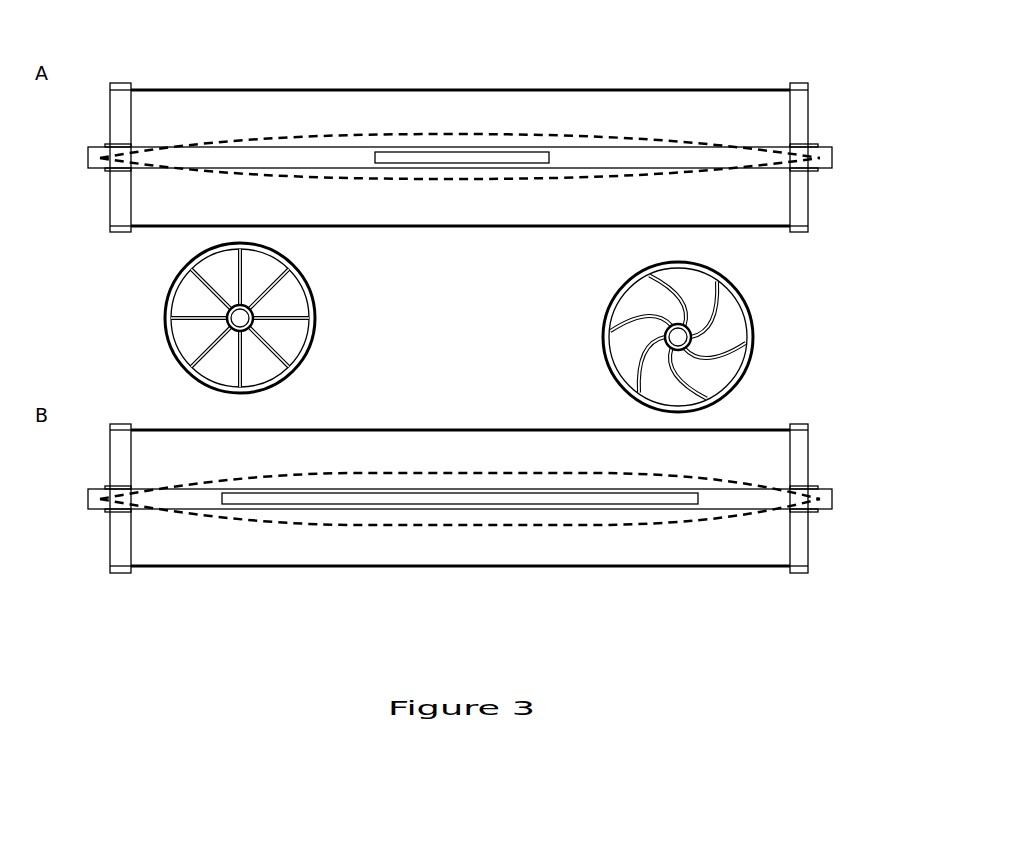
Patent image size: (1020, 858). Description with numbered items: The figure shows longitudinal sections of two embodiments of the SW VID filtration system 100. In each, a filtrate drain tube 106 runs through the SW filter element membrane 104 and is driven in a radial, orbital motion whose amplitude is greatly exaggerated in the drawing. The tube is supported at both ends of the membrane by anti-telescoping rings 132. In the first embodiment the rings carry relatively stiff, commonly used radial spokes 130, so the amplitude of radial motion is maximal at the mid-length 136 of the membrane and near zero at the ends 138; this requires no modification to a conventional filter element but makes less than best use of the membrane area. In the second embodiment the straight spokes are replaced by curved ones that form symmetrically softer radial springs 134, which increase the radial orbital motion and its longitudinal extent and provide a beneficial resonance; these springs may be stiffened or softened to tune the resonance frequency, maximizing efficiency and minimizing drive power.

In FIG. 3A, the SW VID filtration system 100 is at (456, 180).
In FIG. 3B, the SW VID filtration system 100 is at (464, 489).
In FIG. 3A, the SW filter element membrane 104 is at (225, 113).
In FIG. 3B, the SW filter element membrane 104 is at (218, 545).
In FIG. 3A, the filtrate drain tube 106 is at (830, 147).
In FIG. 3B, the filtrate drain tube 106 is at (831, 488).
In FIG. 3A, the radial spokes 130 is at (283, 350).
In FIG. 3A, the anti-telescoping rings 132 is at (118, 204).
In FIG. 3B, the anti-telescoping rings 132 is at (797, 450).
In FIG. 3B, the radial springs 134 is at (680, 392).
In FIG. 3A, the mid-length 136 is at (460, 178).
In FIG. 3B, the mid-length 136 is at (443, 345).
In FIG. 3A, the ends 138 is at (96, 141).
In FIG. 3B, the ends 138 is at (93, 516).